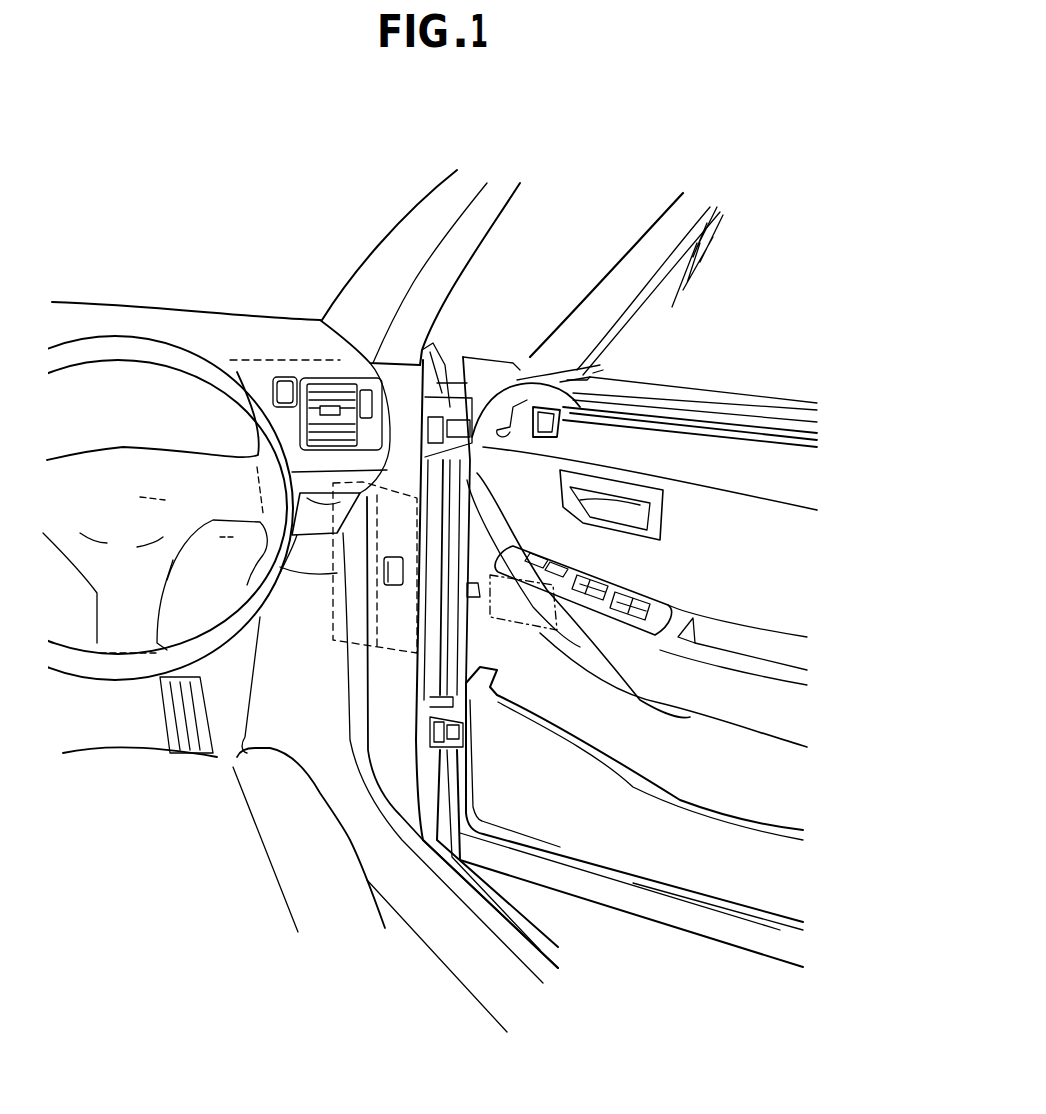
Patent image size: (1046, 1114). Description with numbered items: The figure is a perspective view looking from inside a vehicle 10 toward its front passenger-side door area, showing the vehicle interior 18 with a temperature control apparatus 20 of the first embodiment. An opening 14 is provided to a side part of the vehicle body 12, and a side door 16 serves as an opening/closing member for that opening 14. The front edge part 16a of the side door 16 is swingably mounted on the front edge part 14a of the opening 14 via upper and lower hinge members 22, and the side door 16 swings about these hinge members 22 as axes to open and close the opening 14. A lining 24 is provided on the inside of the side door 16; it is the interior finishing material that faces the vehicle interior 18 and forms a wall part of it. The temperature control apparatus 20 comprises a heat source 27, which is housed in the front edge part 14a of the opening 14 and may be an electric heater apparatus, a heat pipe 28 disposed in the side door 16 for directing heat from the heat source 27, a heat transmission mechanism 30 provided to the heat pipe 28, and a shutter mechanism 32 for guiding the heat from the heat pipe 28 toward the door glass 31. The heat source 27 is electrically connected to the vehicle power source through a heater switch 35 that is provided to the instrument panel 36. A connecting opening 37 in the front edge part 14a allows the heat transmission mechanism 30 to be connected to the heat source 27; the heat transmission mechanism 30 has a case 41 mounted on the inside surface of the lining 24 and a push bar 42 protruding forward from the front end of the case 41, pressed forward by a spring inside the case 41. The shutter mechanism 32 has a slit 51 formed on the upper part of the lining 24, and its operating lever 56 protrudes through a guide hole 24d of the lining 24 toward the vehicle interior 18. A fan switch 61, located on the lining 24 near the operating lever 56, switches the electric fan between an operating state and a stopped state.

The vehicle 10 is at (267, 147).
The vehicle body 12 is at (415, 200).
The opening 14 is at (473, 225).
The front edge part of the opening 14a is at (383, 670).
The side door 16 is at (642, 240).
The front edge part of the side door 16a is at (490, 647).
The vehicle interior 18 is at (185, 832).
The temperature control apparatus 20 is at (386, 717).
The hinge member 22 is at (428, 340).
The lining 24 is at (690, 757).
The guide hole 24d is at (513, 417).
The heat source 27 is at (315, 570).
The heat pipe 28 is at (555, 620).
The heat transmission mechanism 30 is at (522, 625).
The door glass 31 is at (680, 265).
The shutter mechanism 32 is at (688, 413).
The heater switch 35 is at (286, 378).
The instrument panel 36 is at (150, 314).
The connecting opening 37 is at (395, 575).
The case 41 is at (570, 560).
The push bar 42 is at (480, 583).
The slit 51 is at (767, 427).
The operating lever 56 is at (503, 427).
The fan switch 61 is at (597, 375).